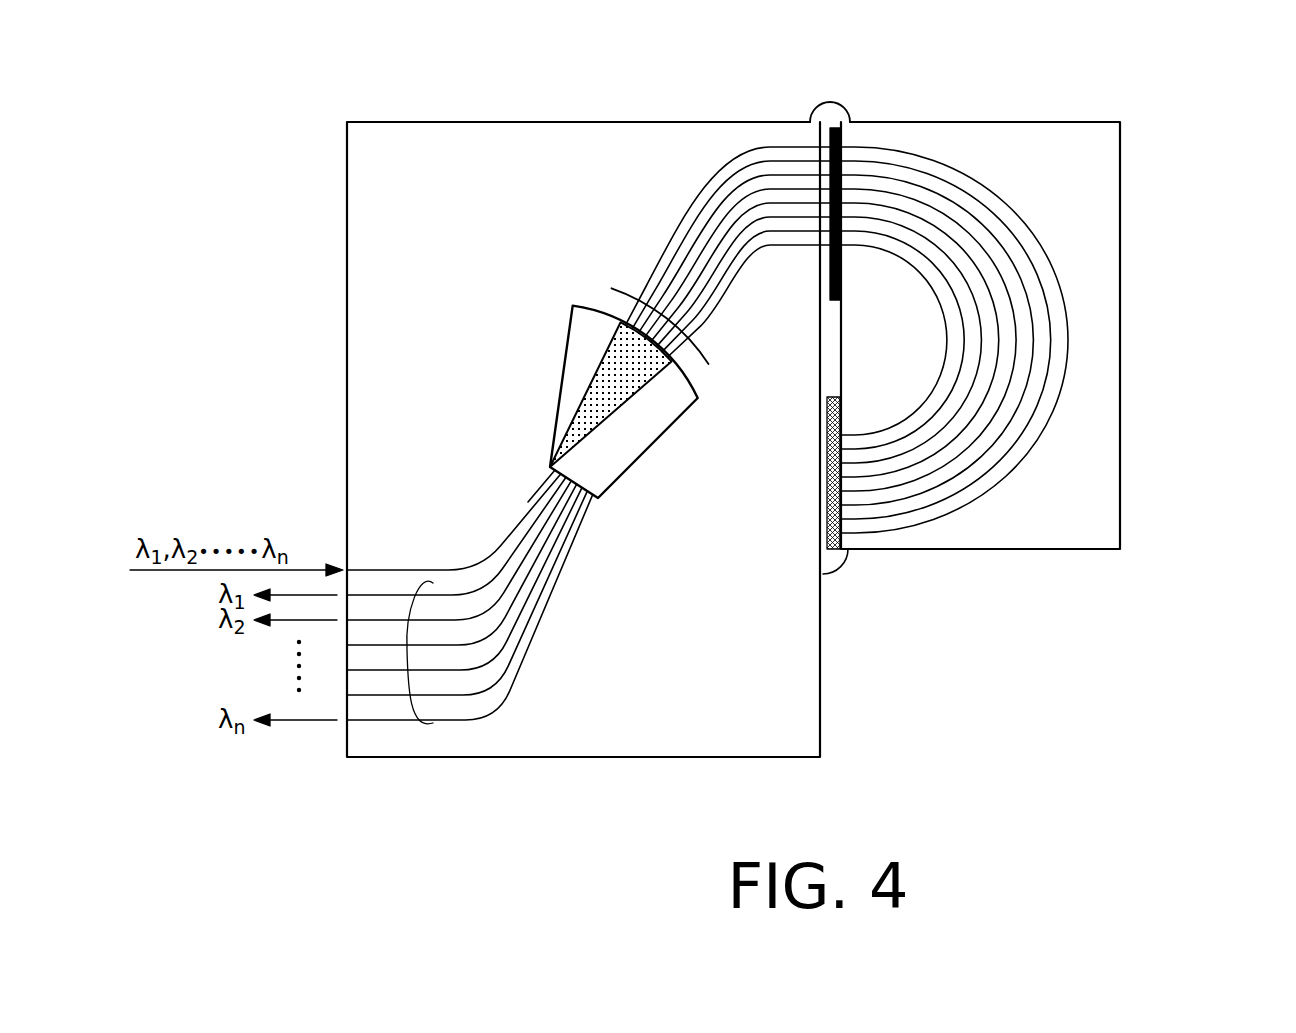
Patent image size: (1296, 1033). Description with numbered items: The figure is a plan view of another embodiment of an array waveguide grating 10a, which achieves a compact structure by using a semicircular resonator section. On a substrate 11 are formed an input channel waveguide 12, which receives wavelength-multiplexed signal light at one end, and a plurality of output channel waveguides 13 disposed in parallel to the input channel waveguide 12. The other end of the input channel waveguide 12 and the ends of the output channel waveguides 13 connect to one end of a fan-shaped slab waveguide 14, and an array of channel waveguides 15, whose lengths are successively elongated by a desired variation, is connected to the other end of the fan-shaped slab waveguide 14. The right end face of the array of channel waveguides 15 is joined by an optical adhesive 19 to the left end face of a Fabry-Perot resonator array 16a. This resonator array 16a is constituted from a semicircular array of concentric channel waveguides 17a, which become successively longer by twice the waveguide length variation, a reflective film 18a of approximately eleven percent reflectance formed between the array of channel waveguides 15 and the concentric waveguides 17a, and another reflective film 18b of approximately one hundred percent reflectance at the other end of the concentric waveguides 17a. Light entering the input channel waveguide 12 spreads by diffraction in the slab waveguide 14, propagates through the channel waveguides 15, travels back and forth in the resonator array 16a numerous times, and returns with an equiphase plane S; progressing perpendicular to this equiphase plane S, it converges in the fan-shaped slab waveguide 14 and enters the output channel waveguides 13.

The array waveguide grating 10a is at (1178, 184).
The substrate 11 is at (347, 272).
The input channel waveguide 12 is at (421, 580).
The output channel waveguides 13 is at (430, 725).
The fan-shaped slab waveguide 14 is at (566, 337).
The equiphase plane S is at (614, 297).
The array of channel waveguides 15 is at (768, 262).
The Fabry-Perot resonator array 16a is at (827, 596).
The array of concentric channel waveguides 17a is at (928, 322).
The reflective film 18a is at (835, 306).
The reflective film 18b is at (835, 553).
The optical adhesive 19 is at (838, 102).